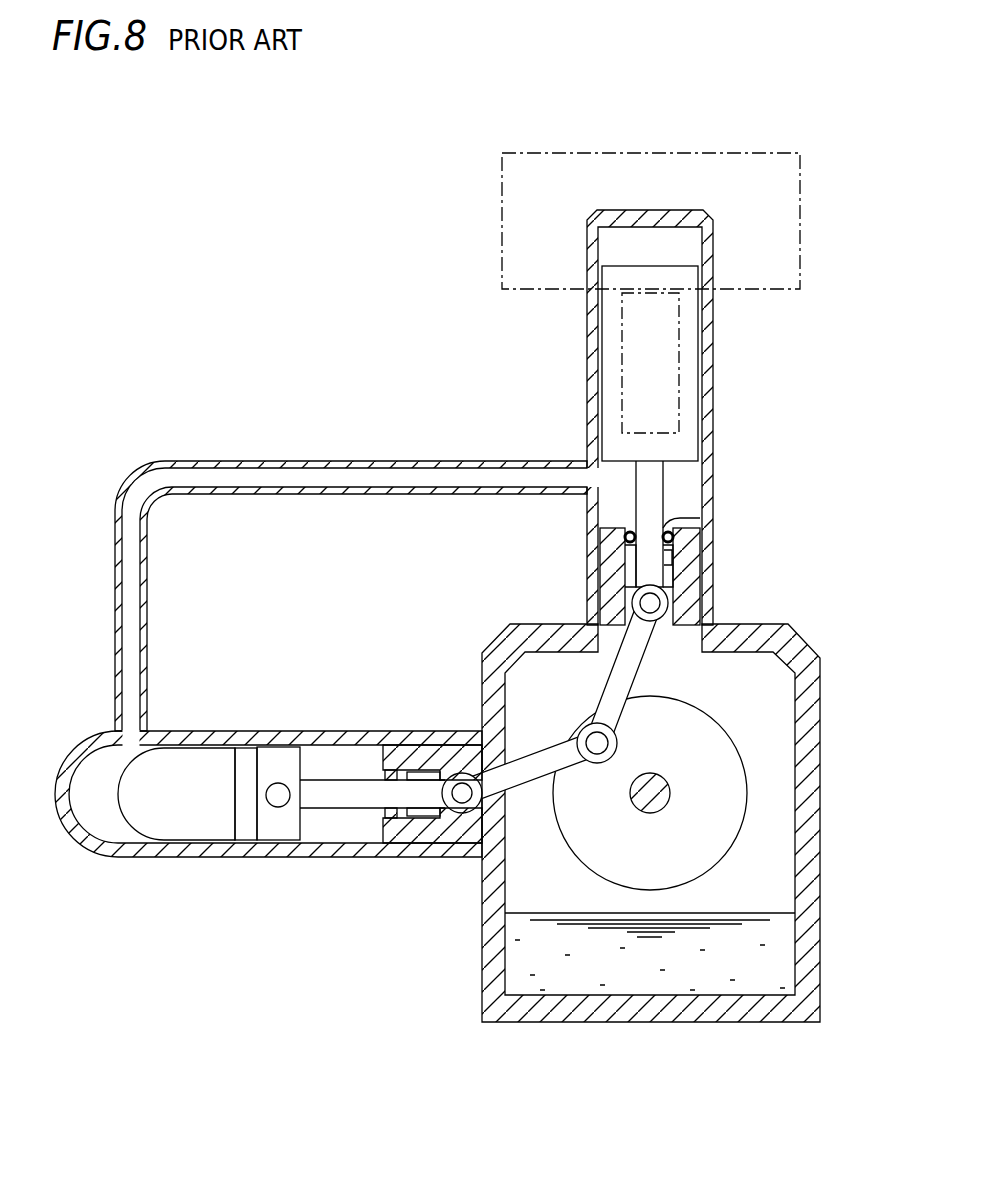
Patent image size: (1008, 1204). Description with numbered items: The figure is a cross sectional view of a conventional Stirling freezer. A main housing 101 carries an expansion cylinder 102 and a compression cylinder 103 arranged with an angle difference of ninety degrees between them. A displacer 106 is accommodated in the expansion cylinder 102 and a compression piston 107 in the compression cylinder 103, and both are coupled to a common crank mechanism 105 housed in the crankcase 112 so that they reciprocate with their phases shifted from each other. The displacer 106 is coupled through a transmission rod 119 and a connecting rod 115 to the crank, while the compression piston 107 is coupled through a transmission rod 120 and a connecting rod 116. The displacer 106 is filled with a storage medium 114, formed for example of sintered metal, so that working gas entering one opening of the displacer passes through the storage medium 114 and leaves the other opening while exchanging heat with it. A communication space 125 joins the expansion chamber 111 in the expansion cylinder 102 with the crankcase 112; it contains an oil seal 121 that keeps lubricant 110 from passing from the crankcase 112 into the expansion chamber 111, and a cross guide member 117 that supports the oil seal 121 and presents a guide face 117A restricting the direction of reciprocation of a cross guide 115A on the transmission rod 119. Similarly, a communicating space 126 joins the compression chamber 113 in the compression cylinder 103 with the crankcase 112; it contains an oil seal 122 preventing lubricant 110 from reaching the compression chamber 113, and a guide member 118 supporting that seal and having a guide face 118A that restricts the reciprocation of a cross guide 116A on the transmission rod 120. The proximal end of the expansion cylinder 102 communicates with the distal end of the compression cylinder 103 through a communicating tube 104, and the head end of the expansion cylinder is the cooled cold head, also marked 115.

The main housing 101 is at (810, 797).
The expansion cylinder 102 is at (700, 334).
The compression cylinder 103 is at (195, 850).
The communicating tube 104 is at (333, 462).
The crank mechanism 105 is at (687, 723).
The displacer 106 is at (687, 423).
The compression piston 107 is at (162, 808).
The lubricant 110 is at (735, 912).
The expansion chamber 111 is at (642, 242).
The crankcase 112 is at (770, 747).
The compression chamber 113 is at (98, 770).
The storage medium 114 is at (680, 370).
The connecting rod 115 is at (733, 153).
The cross guide 115A is at (670, 612).
The connecting rod 116 is at (516, 772).
The cross guide 116A is at (445, 770).
The cross guide member 117 is at (687, 583).
The guide face 117A is at (673, 555).
The guide member 118 is at (434, 830).
The guide face 118A is at (420, 818).
The transmission rod 119 is at (652, 473).
The transmission rod 120 is at (315, 797).
The oil seal 121 is at (672, 523).
The oil seal 122 is at (383, 815).
The communication space 125 is at (687, 495).
The communicating space 126 is at (342, 833).